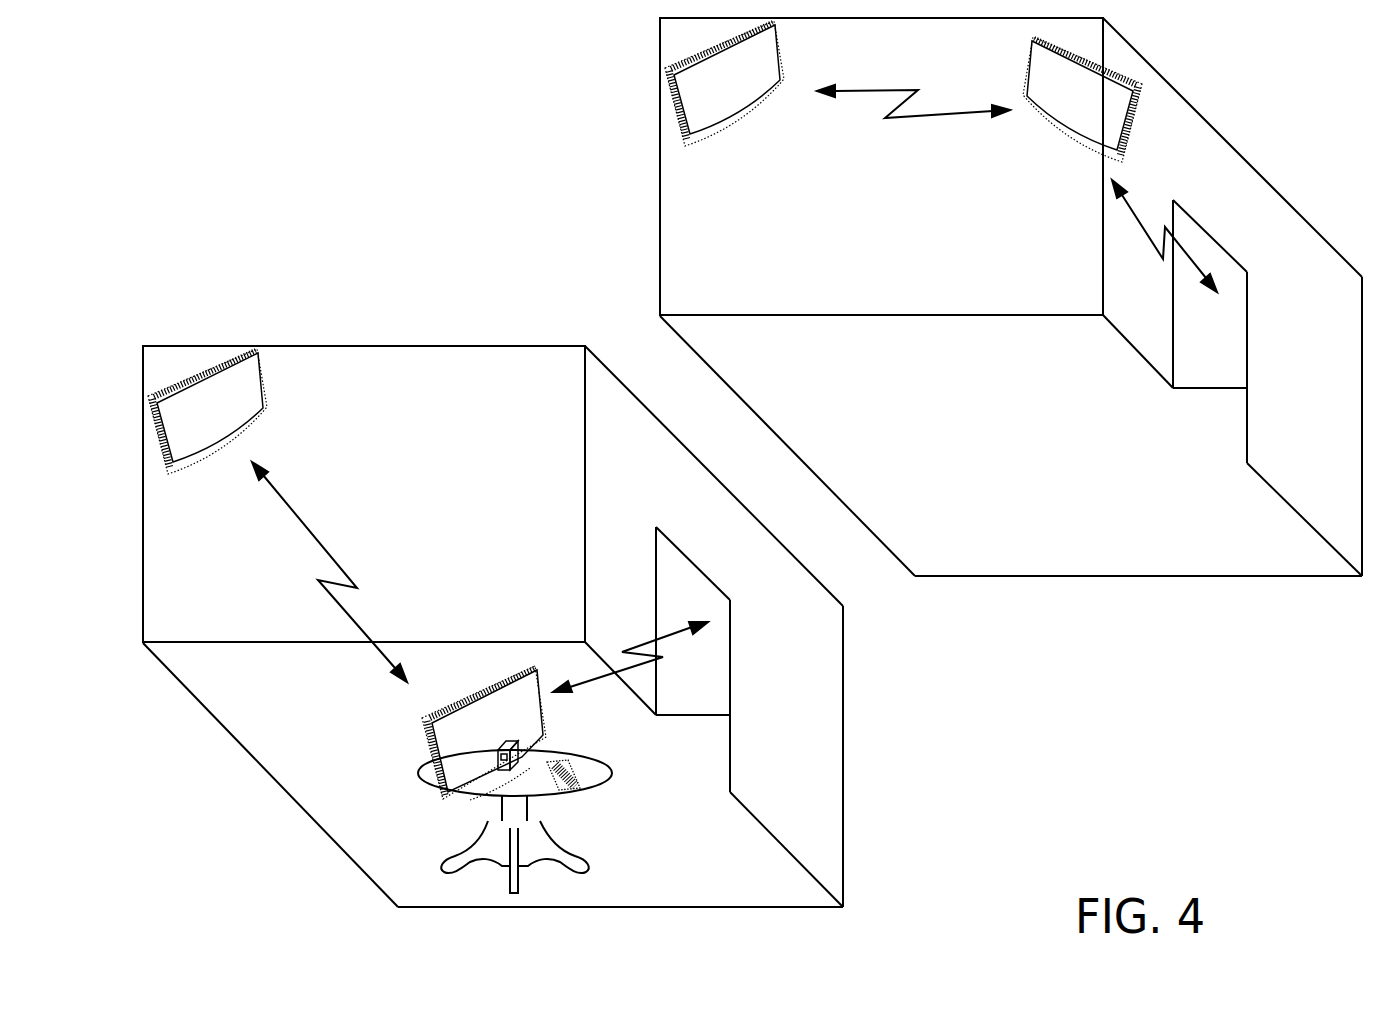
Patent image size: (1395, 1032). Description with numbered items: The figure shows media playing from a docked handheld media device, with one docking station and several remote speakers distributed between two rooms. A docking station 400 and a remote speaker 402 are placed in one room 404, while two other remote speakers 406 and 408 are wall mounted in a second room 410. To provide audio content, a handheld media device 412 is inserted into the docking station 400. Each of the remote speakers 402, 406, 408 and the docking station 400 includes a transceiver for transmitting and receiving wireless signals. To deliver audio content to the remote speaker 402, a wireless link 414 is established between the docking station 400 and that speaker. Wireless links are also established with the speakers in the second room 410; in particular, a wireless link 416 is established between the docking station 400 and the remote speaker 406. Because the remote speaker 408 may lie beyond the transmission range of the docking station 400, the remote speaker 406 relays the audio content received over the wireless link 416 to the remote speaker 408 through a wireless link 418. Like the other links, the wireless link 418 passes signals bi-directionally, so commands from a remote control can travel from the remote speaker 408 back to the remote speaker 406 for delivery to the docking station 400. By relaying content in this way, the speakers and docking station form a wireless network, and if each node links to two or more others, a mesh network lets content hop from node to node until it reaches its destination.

The docking station 400 is at (423, 728).
The remote speaker 402 is at (263, 390).
The room 404 is at (403, 345).
The remote speaker 406 is at (1063, 128).
The remote speaker 408 is at (680, 97).
The second room 410 is at (1232, 147).
The handheld media device 412 is at (525, 755).
The wireless link 414 is at (290, 512).
The wireless link 416 is at (597, 678).
The wireless link 418 is at (887, 120).